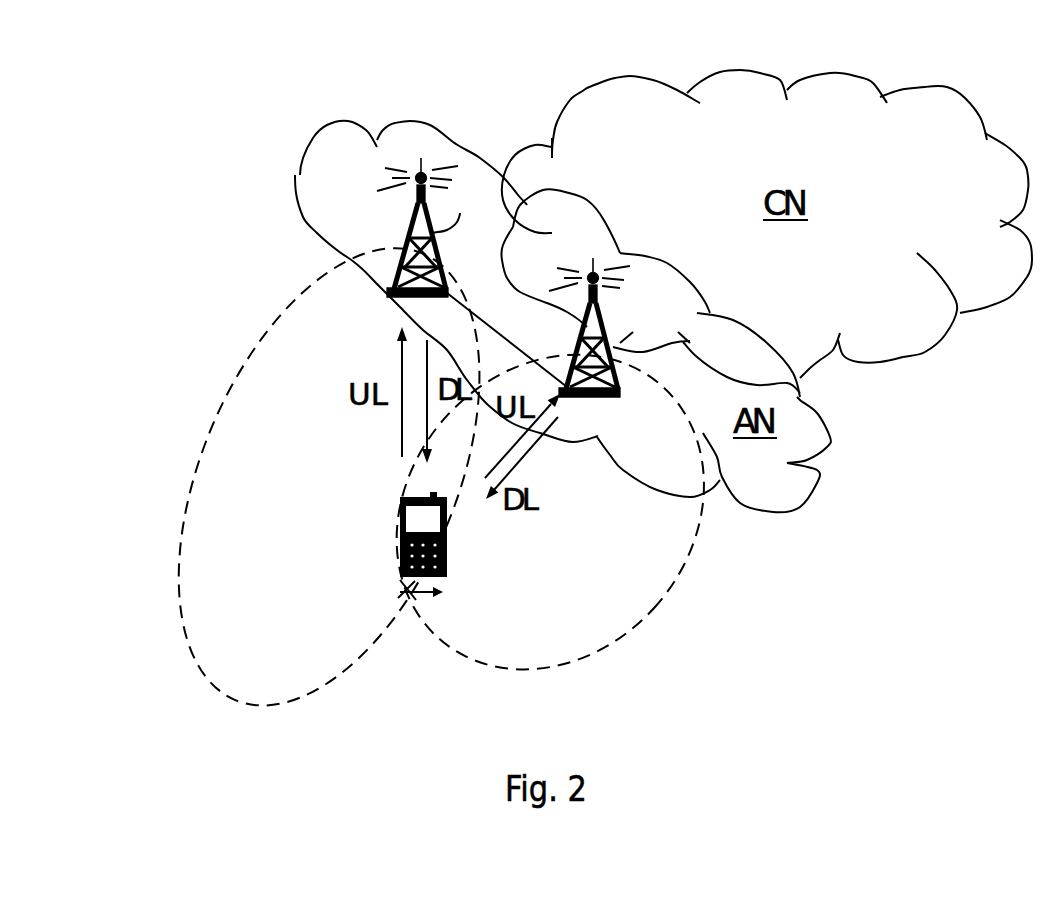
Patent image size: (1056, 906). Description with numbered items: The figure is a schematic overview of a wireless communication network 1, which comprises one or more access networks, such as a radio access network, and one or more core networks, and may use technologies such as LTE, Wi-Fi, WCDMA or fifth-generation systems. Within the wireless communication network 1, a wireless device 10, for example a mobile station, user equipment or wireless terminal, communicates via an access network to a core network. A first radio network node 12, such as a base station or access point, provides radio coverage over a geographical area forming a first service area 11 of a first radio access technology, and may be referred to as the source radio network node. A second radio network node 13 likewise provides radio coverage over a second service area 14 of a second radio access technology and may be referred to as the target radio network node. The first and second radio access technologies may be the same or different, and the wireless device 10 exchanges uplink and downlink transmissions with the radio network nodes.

The wireless communication network 1 is at (258, 85).
The wireless device 10 is at (401, 561).
The first service area 11 is at (343, 475).
The first radio network node 12 is at (437, 227).
The second radio network node 13 is at (611, 327).
The second service area 14 is at (603, 493).